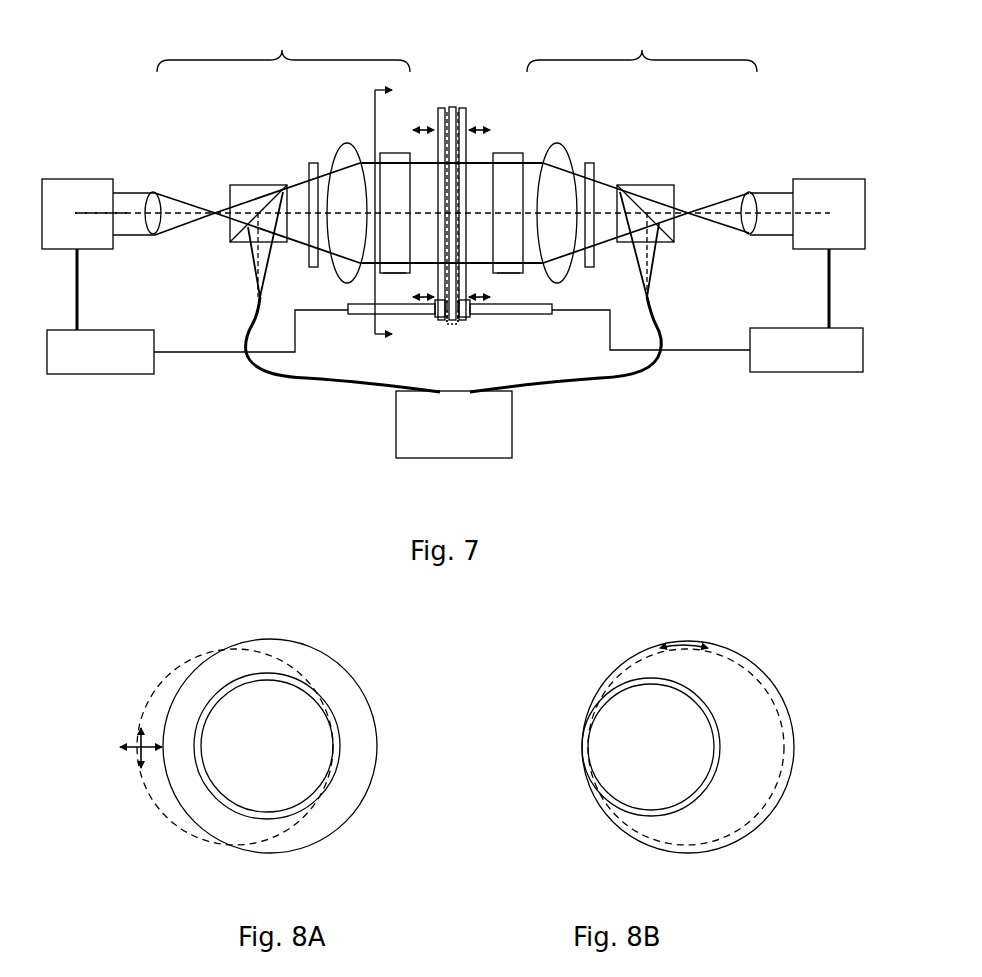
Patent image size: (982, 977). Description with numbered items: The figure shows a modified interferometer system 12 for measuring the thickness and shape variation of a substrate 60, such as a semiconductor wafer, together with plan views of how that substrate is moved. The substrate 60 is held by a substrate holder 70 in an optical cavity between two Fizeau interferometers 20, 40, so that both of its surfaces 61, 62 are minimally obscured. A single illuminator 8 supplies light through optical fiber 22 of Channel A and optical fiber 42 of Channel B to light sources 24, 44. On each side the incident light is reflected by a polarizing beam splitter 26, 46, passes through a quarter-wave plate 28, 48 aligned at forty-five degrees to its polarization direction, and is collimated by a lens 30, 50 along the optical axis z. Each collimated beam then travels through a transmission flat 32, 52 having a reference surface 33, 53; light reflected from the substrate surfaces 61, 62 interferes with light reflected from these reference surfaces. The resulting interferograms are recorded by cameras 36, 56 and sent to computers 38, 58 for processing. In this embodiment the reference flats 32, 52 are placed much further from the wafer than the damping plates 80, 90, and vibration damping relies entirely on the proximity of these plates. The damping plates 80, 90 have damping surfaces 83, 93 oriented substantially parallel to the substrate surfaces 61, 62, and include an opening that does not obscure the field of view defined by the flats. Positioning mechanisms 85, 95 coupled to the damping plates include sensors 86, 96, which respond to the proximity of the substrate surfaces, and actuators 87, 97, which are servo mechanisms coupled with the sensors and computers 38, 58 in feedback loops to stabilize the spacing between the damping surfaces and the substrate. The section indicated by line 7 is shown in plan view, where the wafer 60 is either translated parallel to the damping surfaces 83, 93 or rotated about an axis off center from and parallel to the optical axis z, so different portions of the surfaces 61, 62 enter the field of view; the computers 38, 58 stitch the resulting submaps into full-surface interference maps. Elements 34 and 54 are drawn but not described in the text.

In FIG. 7, the interferometer system 12 is at (106, 57).
In FIG. 7, the Fizeau interferometer 20 is at (283, 48).
In FIG. 7, the Fizeau interferometer 40 is at (642, 48).
In FIG. 7, the camera 36 is at (81, 178).
In FIG. 7, the optical axis z is at (127, 187).
In FIG. 7, the channel A focusing lens 34 is at (155, 192).
In FIG. 7, the polarizing beam splitter 26 is at (258, 190).
In FIG. 7, the quarter-wave plate 28 is at (314, 165).
In FIG. 7, the lens 30 is at (348, 145).
In FIG. 7, the section line 7 is at (389, 214).
In FIG. 7, the transmission flat 32 is at (395, 156).
In FIG. 8A, the transmission flat 32 is at (317, 752).
In FIG. 8B, the transmission flat 32 is at (610, 762).
In FIG. 7, the reference surface 33 is at (406, 273).
In FIG. 7, the damping plate 80 is at (441, 108).
In FIG. 8A, the damping plate 80 is at (341, 664).
In FIG. 7, the damping surface 83 is at (446, 110).
In FIG. 7, the substrate holder 70 is at (453, 107).
In FIG. 7, the damping surface 93 is at (458, 110).
In FIG. 7, the damping plate 90 is at (464, 108).
In FIG. 7, the substrate 60 is at (450, 322).
In FIG. 8A, the substrate 60 is at (167, 814).
In FIG. 8B, the substrate 60 is at (752, 817).
In FIG. 7, the surface 61 is at (444, 322).
In FIG. 7, the surface 62 is at (462, 320).
In FIG. 7, the sensor 86 is at (437, 317).
In FIG. 7, the sensor 96 is at (466, 317).
In FIG. 7, the transmission flat 52 is at (504, 155).
In FIG. 7, the reference surface 53 is at (505, 273).
In FIG. 7, the positioning mechanism 85 is at (341, 305).
In FIG. 7, the actuator 87 is at (356, 318).
In FIG. 7, the positioning mechanism 95 is at (578, 305).
In FIG. 7, the actuator 97 is at (540, 318).
In FIG. 7, the lens 50 is at (557, 147).
In FIG. 7, the quarter-wave plate 48 is at (590, 167).
In FIG. 7, the polarizing beam splitter 46 is at (672, 190).
In FIG. 7, the channel B focusing lens 54 is at (752, 195).
In FIG. 7, the camera 56 is at (815, 177).
In FIG. 7, the computer 38 is at (118, 331).
In FIG. 7, the computer 58 is at (771, 318).
In FIG. 7, the light source 24 is at (257, 298).
In FIG. 7, the optical fiber 22 is at (248, 361).
In FIG. 7, the light source 44 is at (648, 298).
In FIG. 7, the optical fiber 42 is at (653, 365).
In FIG. 7, the illuminator 8 is at (510, 457).